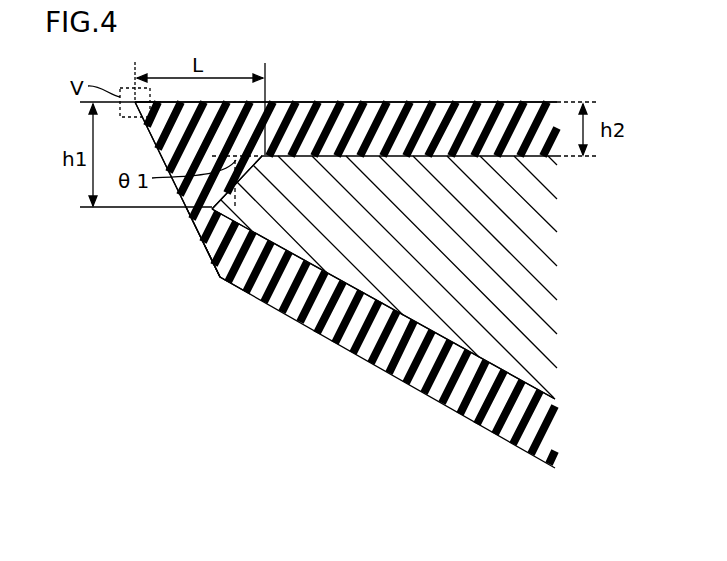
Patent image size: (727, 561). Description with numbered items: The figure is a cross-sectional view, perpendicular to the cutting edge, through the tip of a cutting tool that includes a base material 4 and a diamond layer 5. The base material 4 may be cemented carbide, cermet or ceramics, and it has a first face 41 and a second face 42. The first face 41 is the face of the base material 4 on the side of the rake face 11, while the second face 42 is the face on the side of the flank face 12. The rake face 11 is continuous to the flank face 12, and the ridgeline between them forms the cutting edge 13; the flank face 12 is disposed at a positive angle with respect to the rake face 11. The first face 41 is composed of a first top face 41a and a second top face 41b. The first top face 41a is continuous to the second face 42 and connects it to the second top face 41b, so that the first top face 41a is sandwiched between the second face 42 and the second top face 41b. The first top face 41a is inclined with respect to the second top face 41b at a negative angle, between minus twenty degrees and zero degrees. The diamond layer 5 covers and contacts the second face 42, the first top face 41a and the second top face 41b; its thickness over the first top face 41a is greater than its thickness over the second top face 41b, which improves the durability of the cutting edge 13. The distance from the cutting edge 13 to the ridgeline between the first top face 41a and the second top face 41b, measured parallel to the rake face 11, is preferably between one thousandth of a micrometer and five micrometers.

The base material 4 is at (543, 273).
The diamond layer 5 is at (387, 118).
The rake face 11 is at (452, 101).
The flank face 12 is at (220, 272).
The cutting edge 13 is at (137, 102).
The first face 41 is at (137, 217).
The first top face 41a is at (236, 160).
The second top face 41b is at (318, 157).
The second face 42 is at (413, 325).